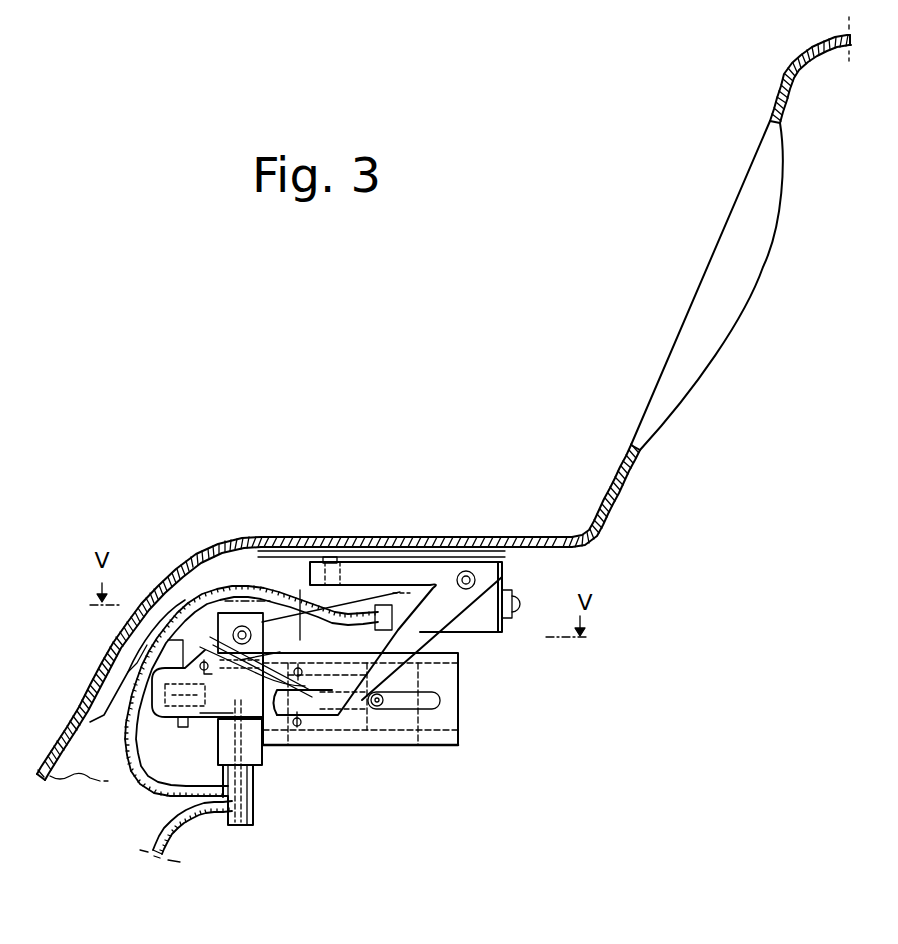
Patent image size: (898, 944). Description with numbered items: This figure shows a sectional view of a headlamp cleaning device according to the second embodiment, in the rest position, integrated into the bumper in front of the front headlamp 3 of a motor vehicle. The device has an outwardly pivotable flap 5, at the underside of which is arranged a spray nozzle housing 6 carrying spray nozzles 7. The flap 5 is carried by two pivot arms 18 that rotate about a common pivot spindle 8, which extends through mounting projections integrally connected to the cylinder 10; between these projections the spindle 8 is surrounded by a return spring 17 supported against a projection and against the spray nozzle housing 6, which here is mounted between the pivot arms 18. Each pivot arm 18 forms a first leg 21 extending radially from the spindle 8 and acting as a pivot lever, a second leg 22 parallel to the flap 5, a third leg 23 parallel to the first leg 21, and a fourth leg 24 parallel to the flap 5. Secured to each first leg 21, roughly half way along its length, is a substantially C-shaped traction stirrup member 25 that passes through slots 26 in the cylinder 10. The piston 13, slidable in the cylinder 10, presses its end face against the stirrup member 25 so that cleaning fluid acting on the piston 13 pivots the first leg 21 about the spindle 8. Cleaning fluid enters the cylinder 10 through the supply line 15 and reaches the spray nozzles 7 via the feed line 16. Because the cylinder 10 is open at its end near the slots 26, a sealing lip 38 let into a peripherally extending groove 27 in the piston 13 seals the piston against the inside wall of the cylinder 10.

The front headlamp 3 is at (676, 337).
The flap 5 is at (355, 540).
The spray nozzle housing 6 is at (487, 620).
The spray nozzle 7 is at (523, 598).
The pivot spindle 8 is at (218, 630).
The cylinder 10 is at (390, 728).
The piston 13 is at (340, 722).
The supply line 15 is at (192, 857).
The feed line 16 is at (200, 597).
The return spring 17 is at (278, 653).
The pivot arm 18 is at (432, 618).
The first leg 21 is at (157, 633).
The second leg 22 is at (238, 712).
The third leg 23 is at (412, 658).
The fourth leg 24 is at (375, 566).
The traction stirrup member 25 is at (263, 730).
The slot 26 is at (443, 704).
The peripherally extending groove 27 is at (297, 728).
The sealing lip 38 is at (295, 570).